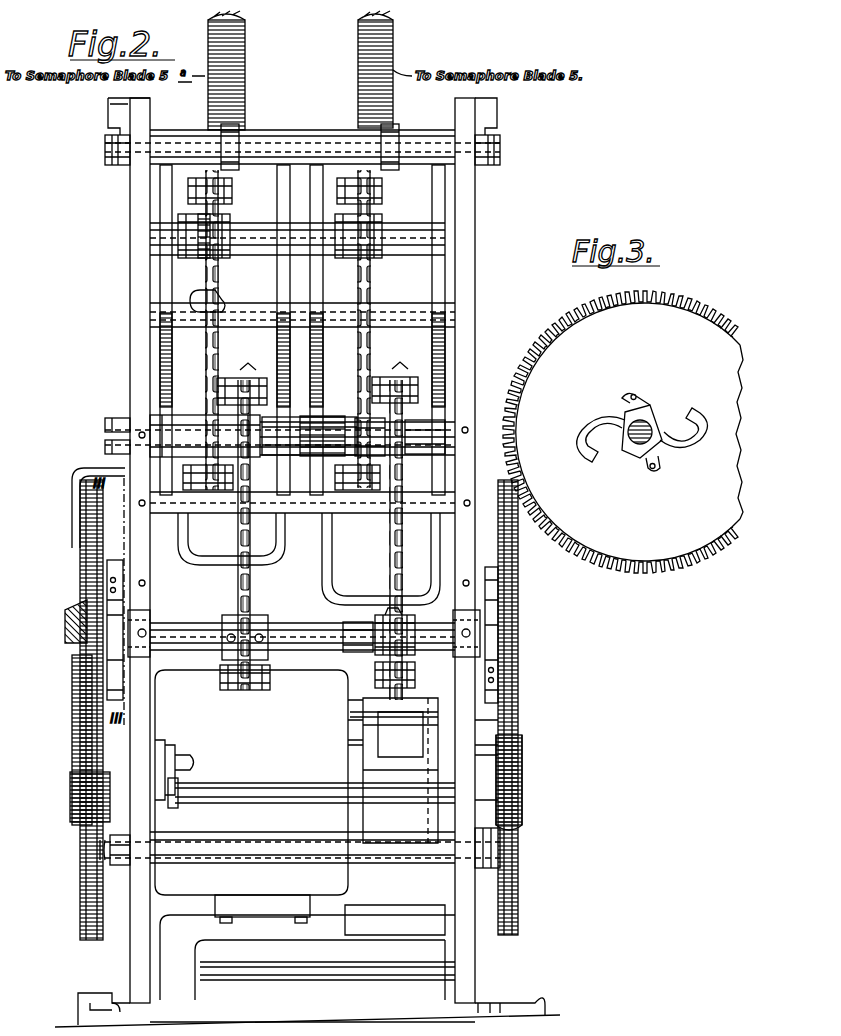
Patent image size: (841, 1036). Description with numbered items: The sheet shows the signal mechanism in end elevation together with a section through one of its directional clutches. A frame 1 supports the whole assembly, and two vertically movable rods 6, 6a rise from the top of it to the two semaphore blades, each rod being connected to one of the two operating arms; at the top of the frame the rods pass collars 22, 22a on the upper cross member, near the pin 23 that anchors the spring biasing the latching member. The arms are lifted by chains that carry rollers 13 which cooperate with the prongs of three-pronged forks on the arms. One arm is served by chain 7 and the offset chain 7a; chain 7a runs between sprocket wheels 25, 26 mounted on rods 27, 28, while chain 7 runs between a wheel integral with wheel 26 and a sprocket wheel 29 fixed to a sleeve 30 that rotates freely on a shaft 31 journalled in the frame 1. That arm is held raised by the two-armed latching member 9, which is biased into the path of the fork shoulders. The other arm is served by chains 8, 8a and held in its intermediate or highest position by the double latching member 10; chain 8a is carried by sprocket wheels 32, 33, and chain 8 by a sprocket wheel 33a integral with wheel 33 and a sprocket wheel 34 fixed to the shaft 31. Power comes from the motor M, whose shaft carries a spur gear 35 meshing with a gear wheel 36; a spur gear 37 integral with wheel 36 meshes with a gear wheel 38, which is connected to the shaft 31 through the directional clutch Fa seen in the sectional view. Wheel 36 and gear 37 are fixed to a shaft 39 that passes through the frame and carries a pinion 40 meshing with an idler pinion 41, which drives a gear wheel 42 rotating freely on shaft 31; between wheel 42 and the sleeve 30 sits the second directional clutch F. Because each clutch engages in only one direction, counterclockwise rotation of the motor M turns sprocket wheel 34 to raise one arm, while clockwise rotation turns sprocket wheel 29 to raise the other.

In FIG. 2, the frame 1 is at (130, 900).
In FIG. 2, the vertically movable rod 6 is at (388, 60).
In FIG. 2, the vertically movable rod 6a is at (244, 60).
In FIG. 2, the chain 7 is at (392, 527).
In FIG. 2, the chain 7a is at (368, 288).
In FIG. 2, the chain 8 is at (252, 556).
In FIG. 2, the chain 8a is at (247, 272).
In FIG. 2, the latching member 9 is at (322, 292).
In FIG. 2, the latching member 10 is at (165, 278).
In FIG. 2, the rollers 13 is at (227, 189).
In FIG. 2, the spring 22 is at (393, 143).
In FIG. 2, the collar 22a is at (238, 146).
In FIG. 2, the pin 23 is at (336, 140).
In FIG. 2, the sprocket wheel 25 is at (372, 224).
In FIG. 2, the sprocket wheel 26 is at (350, 441).
In FIG. 2, the rod 27 is at (421, 238).
In FIG. 2, the rod 28 is at (330, 440).
In FIG. 2, the sprocket wheel 29 is at (380, 620).
In FIG. 2, the sleeve 30 is at (370, 642).
In FIG. 2, the shaft 31 is at (288, 633).
In FIG. 3, the shaft 31 is at (651, 420).
In FIG. 2, the sprocket wheel 32 is at (222, 229).
In FIG. 2, the sprocket wheel 33 is at (193, 430).
In FIG. 2, the sprocket wheel 33a is at (255, 437).
In FIG. 2, the sprocket wheel 34 is at (261, 622).
In FIG. 2, the spur gear 35 is at (72, 800).
In FIG. 2, the gear wheel 36 is at (74, 734).
In FIG. 2, the spur gear 37 is at (114, 840).
In FIG. 2, the gear wheel 38 is at (83, 648).
In FIG. 3, the gear wheel 38 is at (596, 299).
In FIG. 2, the shaft 39 is at (279, 796).
In FIG. 2, the pinion 40 is at (517, 815).
In FIG. 2, the idler pinion 41 is at (519, 772).
In FIG. 2, the gear wheel 42 is at (518, 677).
In FIG. 2, the directional clutch F is at (493, 600).
In FIG. 2, the directional clutch Fa is at (121, 607).
In FIG. 3, the directional clutch Fa is at (640, 396).
In FIG. 2, the motor M is at (251, 782).